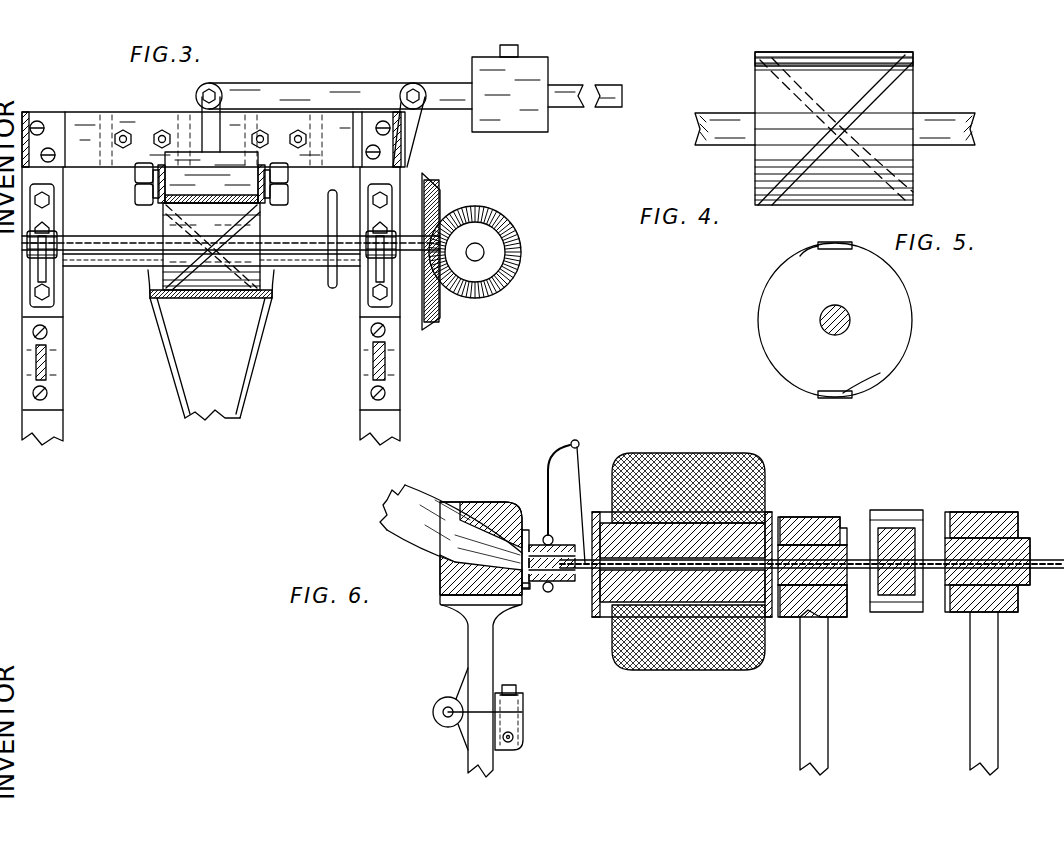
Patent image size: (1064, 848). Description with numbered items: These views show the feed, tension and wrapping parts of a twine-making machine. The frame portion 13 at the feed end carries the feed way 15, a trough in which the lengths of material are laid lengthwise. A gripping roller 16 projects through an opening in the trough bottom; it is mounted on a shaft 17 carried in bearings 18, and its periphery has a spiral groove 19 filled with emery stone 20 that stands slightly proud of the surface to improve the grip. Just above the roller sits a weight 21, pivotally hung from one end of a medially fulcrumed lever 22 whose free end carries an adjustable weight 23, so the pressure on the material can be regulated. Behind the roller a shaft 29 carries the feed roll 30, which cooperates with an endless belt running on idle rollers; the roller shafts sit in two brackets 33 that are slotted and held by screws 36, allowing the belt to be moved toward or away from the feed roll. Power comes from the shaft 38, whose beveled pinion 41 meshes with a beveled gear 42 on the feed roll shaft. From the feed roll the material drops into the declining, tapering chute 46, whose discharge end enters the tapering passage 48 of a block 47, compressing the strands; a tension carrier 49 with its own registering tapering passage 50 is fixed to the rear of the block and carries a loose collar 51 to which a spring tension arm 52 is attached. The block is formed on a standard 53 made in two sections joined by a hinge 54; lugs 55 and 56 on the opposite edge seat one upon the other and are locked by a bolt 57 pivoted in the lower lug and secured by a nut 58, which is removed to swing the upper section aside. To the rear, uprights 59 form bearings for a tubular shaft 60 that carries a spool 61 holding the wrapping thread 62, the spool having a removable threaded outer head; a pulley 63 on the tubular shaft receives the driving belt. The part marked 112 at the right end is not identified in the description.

In FIG. 3, the frame portion 13 is at (50, 427).
In FIG. 3, the feed way 15 is at (250, 210).
In FIG. 3, the gripping roller 16 is at (164, 227).
In FIG. 4, the gripping roller 16 is at (903, 168).
In FIG. 5, the gripping roller 16 is at (902, 318).
In FIG. 3, the shaft 17 is at (106, 236).
In FIG. 4, the shaft 17 is at (707, 145).
In FIG. 5, the shaft 17 is at (821, 320).
In FIG. 3, the bearings 18 is at (36, 272).
In FIG. 4, the spiral groove 19 is at (885, 94).
In FIG. 5, the spiral groove 19 is at (803, 256).
In FIG. 4, the emery stone 20 is at (903, 58).
In FIG. 5, the emery stone 20 is at (830, 242).
In FIG. 3, the weight 21 is at (182, 150).
In FIG. 3, the medially fulcrumed lever 22 is at (321, 90).
In FIG. 3, the adjustable weight 23 is at (530, 126).
In FIG. 3, the shaft 29 is at (128, 262).
In FIG. 3, the feed roll 30 is at (152, 296).
In FIG. 3, the brackets 33 is at (136, 191).
In FIG. 3, the screws 36 is at (156, 142).
In FIG. 3, the shaft 38 is at (479, 252).
In FIG. 3, the beveled pinion 41 is at (483, 290).
In FIG. 3, the beveled gear 42 is at (436, 314).
In FIG. 3, the chute 46 is at (238, 395).
In FIG. 6, the chute 46 is at (418, 535).
In FIG. 6, the block 47 is at (478, 501).
In FIG. 6, the tapering passage 48 is at (441, 597).
In FIG. 6, the tension carrier 49 is at (560, 583).
In FIG. 6, the tapering passage 50 is at (527, 590).
In FIG. 6, the collar 51 is at (553, 538).
In FIG. 6, the spring tension arm 52 is at (563, 444).
In FIG. 6, the standard 53 is at (471, 691).
In FIG. 6, the hinge 54 is at (443, 712).
In FIG. 6, the lug 55 is at (518, 750).
In FIG. 6, the lug 56 is at (522, 700).
In FIG. 6, the bolt 57 is at (508, 685).
In FIG. 6, the nut 58 is at (516, 692).
In FIG. 6, the uprights 59 is at (829, 720).
In FIG. 6, the tubular shaft 60 is at (862, 590).
In FIG. 6, the spool 61 is at (688, 650).
In FIG. 6, the wrapping thread 62 is at (628, 455).
In FIG. 6, the pulley 63 is at (890, 612).
In FIG. 6, the rod 112 is at (1040, 570).